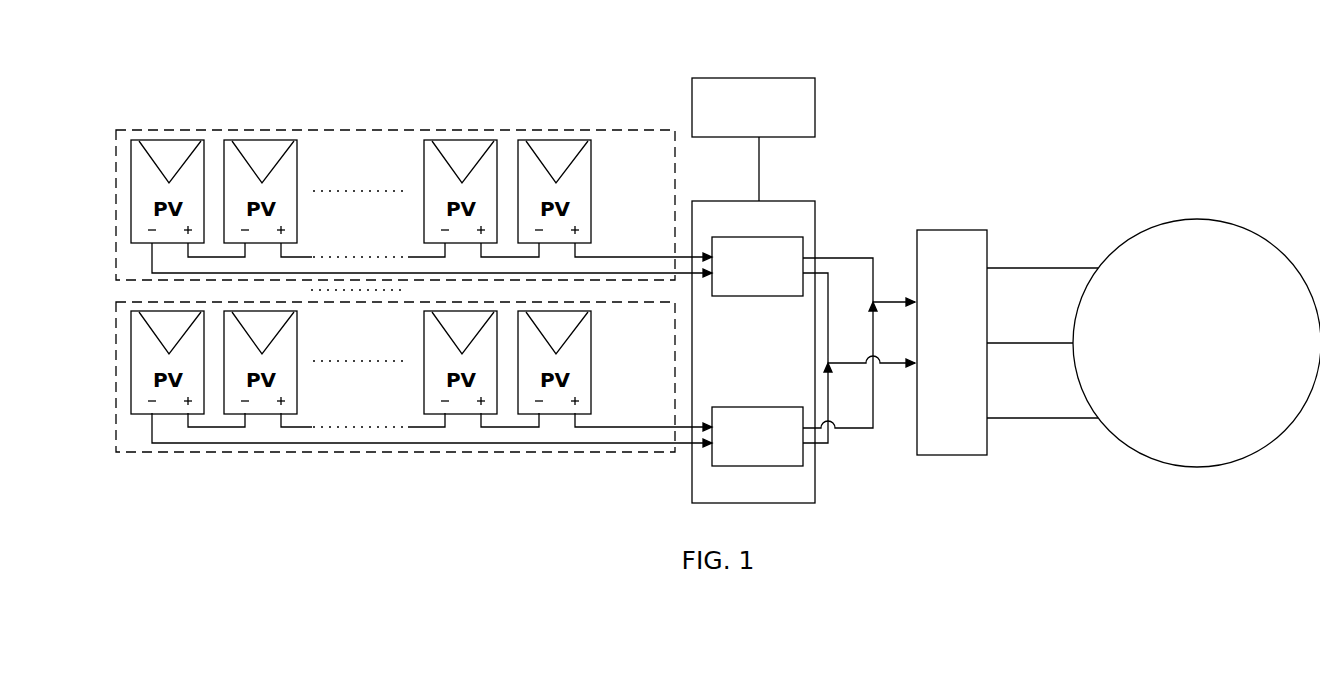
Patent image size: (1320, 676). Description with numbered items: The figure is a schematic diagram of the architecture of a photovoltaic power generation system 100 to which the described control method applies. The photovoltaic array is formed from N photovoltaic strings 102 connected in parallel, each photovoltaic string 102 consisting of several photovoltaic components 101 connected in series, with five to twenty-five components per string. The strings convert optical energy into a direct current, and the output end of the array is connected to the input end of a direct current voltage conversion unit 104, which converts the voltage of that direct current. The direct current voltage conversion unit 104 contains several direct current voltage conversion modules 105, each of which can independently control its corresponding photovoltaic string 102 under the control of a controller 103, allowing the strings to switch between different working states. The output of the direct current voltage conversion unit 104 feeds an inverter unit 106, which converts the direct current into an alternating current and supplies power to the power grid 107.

The photovoltaic power generation system 100 is at (79, 70).
The photovoltaic component 101 is at (197, 141).
The photovoltaic string 102 is at (458, 130).
The controller 103 is at (815, 100).
The direct current voltage conversion unit 104 is at (815, 210).
The direct current voltage conversion module 105 is at (802, 455).
The inverter unit 106 is at (983, 230).
The power grid 107 is at (1196, 343).